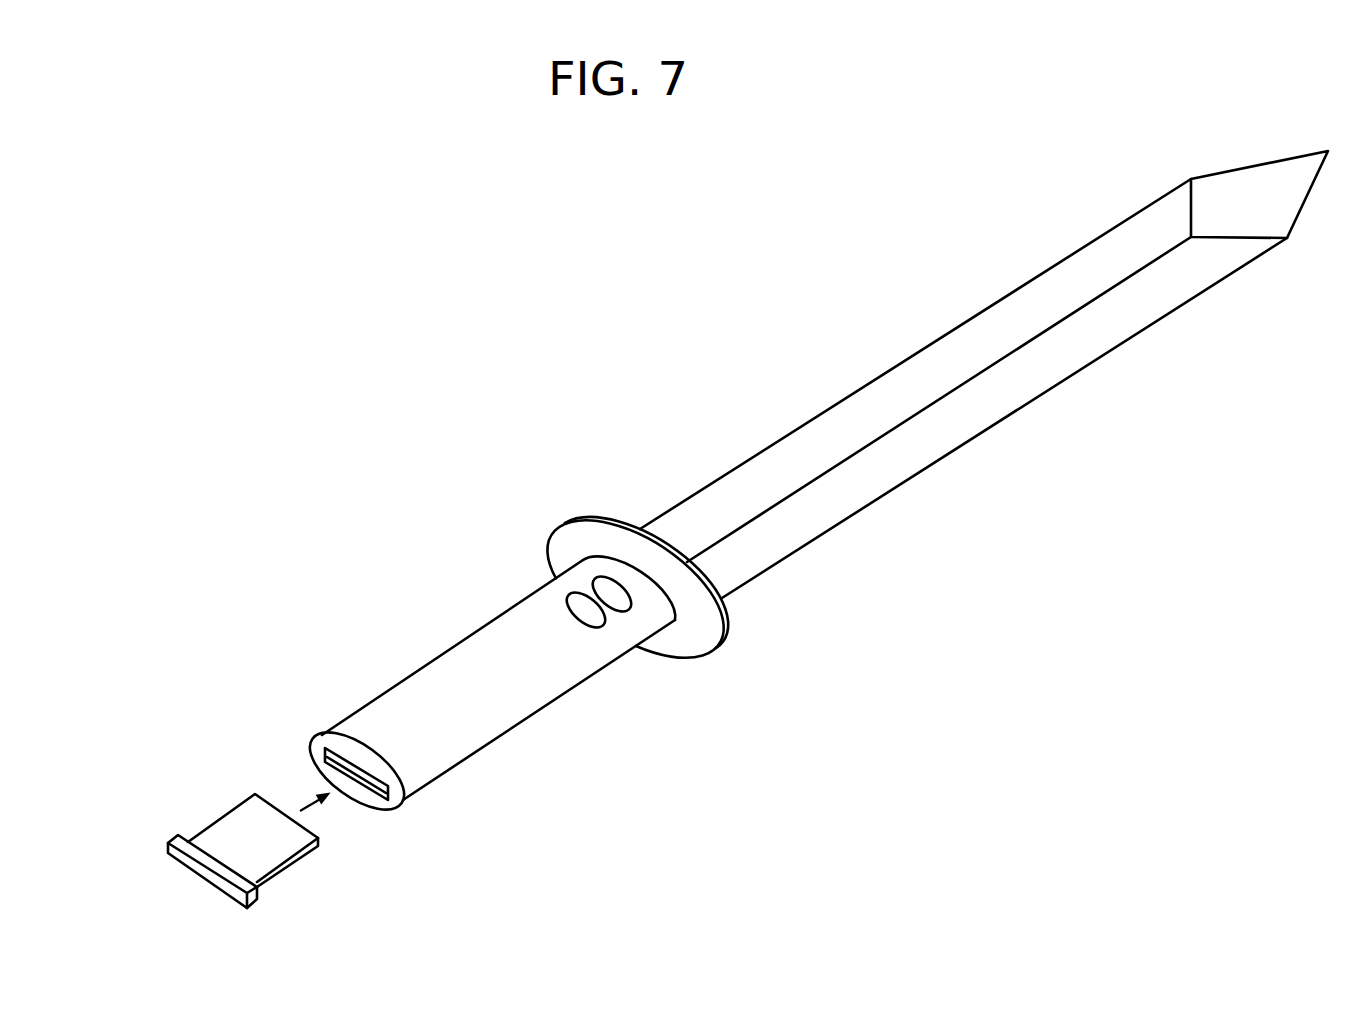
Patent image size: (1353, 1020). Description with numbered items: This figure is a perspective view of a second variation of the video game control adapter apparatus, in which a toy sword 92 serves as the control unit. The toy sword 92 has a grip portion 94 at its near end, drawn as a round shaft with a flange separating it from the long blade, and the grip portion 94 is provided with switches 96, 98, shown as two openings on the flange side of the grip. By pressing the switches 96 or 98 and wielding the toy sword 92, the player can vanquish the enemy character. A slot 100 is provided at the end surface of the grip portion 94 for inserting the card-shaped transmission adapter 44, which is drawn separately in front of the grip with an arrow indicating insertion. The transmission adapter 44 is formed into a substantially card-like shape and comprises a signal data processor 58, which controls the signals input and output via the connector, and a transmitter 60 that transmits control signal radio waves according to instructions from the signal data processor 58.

The toy sword 92 is at (508, 294).
The grip portion 94 is at (512, 723).
The switch 96 is at (604, 588).
The switch 98 is at (577, 606).
The slot 100 is at (388, 799).
The transmission adapter 44 is at (211, 803).
The signal data processor 58 is at (268, 867).
The transmitter 60 is at (207, 874).